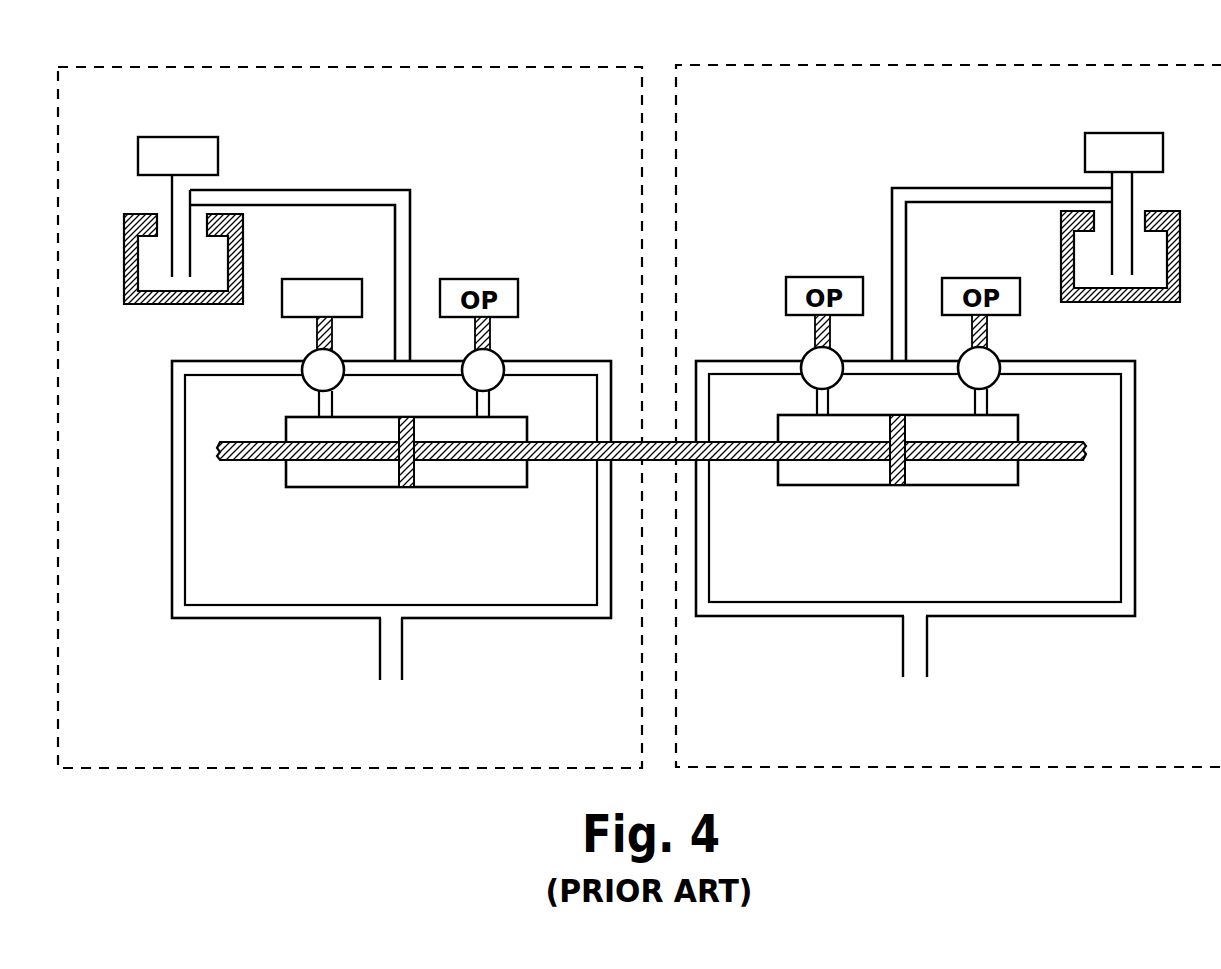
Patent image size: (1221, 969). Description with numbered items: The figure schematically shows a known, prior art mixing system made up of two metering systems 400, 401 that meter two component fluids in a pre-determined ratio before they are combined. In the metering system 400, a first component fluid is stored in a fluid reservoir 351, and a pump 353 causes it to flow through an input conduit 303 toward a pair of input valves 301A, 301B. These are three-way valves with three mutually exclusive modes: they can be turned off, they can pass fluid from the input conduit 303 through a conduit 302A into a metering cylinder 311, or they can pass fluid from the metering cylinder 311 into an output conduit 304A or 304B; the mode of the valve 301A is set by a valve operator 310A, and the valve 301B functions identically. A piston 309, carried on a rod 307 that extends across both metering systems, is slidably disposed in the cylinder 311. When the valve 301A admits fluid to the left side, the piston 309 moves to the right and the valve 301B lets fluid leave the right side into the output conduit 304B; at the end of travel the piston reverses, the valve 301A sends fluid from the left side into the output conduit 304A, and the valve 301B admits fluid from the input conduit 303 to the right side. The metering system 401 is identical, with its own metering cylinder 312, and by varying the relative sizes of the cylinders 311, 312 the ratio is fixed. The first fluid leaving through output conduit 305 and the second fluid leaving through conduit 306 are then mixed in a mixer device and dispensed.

The metering system 400 is at (332, 65).
The metering system 401 is at (790, 63).
The pump 353 is at (203, 140).
The fluid reservoir 351 is at (133, 305).
The input conduit 303 is at (380, 188).
The valve operator 310A is at (325, 279).
The input valve 301A is at (305, 355).
The input valve 301B is at (505, 356).
The conduit 302A is at (317, 403).
The piston rod 307 is at (253, 462).
The piston 309 is at (408, 487).
The metering cylinder 311 is at (495, 487).
The metering cylinder 312 is at (978, 485).
The output conduit 304A is at (170, 590).
The output conduit 304B is at (457, 618).
The output conduit 305 is at (380, 652).
The conduit 306 is at (903, 648).